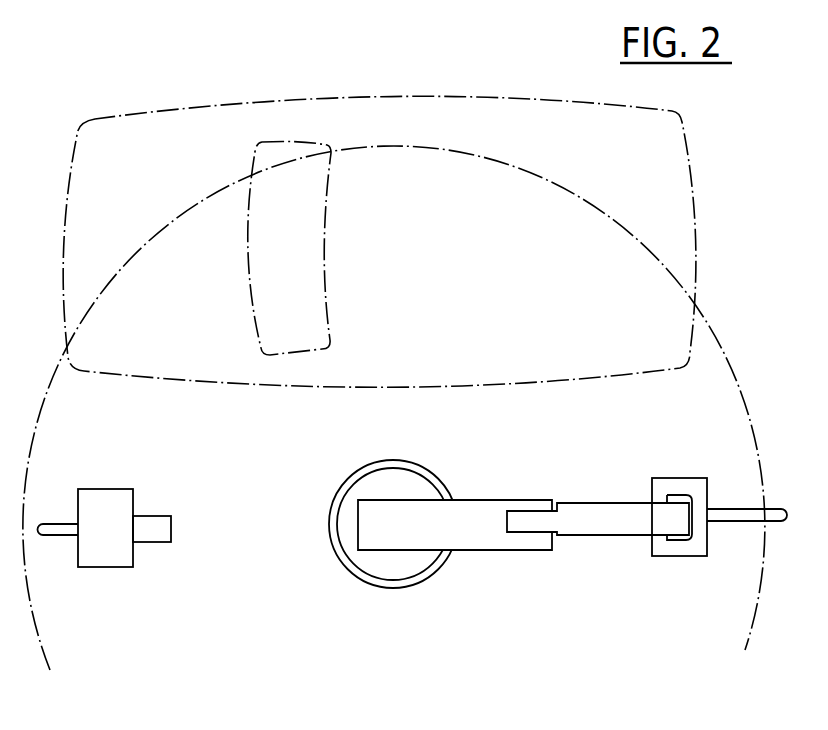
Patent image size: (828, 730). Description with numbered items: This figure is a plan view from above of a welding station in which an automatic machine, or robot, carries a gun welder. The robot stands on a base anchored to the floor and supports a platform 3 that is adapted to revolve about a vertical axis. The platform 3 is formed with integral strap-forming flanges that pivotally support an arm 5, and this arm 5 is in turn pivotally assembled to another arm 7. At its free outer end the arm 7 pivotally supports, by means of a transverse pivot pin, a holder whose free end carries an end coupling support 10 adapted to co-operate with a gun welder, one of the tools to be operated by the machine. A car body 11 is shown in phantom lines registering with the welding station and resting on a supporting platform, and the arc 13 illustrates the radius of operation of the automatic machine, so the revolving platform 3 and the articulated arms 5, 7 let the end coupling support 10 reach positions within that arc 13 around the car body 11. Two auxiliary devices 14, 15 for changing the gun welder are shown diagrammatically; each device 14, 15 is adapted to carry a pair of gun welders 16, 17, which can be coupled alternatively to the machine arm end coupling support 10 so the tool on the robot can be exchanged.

The platform 3 is at (383, 569).
The arm 5 is at (470, 513).
The arm 7 is at (592, 515).
The end coupling support 10 is at (666, 553).
The car body 11 is at (697, 209).
The arc 13 is at (562, 186).
The auxiliary device 14 is at (112, 548).
The auxiliary device 15 is at (696, 553).
The gun welder 16 is at (59, 538).
The gun welder 17 is at (732, 508).